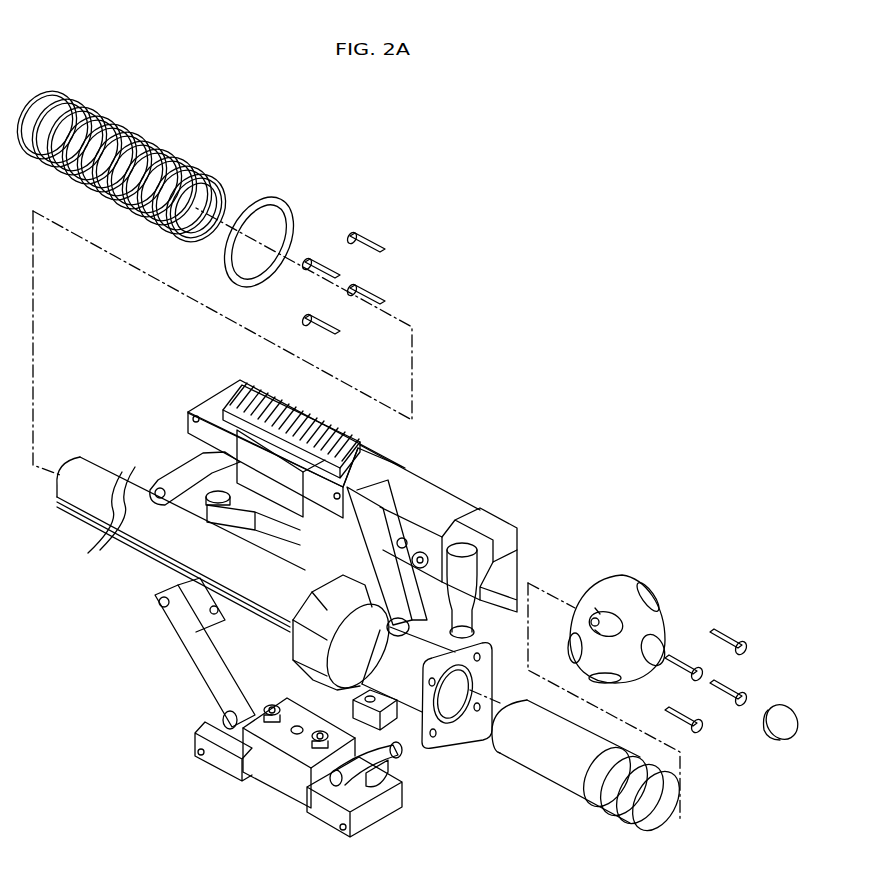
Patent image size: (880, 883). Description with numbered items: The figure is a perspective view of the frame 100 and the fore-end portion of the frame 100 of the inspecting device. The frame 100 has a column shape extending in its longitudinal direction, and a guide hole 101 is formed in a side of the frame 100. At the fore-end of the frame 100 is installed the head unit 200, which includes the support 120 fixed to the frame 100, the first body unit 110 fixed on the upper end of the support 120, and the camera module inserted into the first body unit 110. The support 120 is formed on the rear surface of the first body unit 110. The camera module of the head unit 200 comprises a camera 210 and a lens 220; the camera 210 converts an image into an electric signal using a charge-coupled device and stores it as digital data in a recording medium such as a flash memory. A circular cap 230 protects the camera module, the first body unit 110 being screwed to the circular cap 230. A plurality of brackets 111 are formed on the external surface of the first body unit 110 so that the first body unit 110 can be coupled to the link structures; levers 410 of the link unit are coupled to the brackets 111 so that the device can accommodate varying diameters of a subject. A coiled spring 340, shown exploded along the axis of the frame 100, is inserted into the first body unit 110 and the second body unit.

The frame 100 is at (105, 478).
The guide hole 101 is at (70, 515).
The first body unit 110 is at (446, 738).
The brackets 111 is at (407, 750).
The support 120 is at (333, 577).
The head unit 200 is at (700, 525).
The camera 210 is at (568, 775).
The lens 220 is at (790, 705).
The circular cap 230 is at (630, 586).
The coiled spring 340 is at (153, 140).
The levers 410 is at (197, 658).